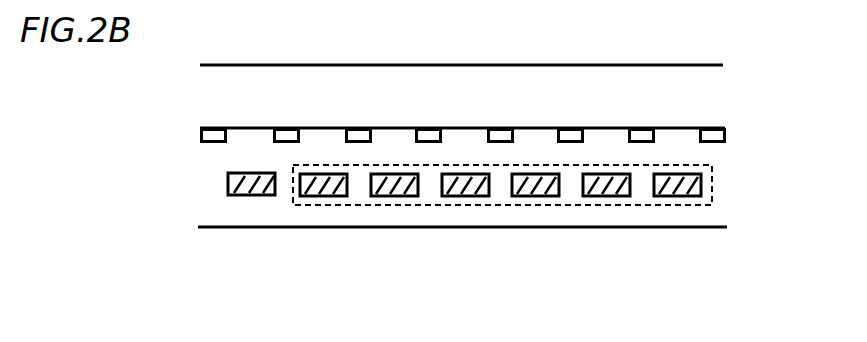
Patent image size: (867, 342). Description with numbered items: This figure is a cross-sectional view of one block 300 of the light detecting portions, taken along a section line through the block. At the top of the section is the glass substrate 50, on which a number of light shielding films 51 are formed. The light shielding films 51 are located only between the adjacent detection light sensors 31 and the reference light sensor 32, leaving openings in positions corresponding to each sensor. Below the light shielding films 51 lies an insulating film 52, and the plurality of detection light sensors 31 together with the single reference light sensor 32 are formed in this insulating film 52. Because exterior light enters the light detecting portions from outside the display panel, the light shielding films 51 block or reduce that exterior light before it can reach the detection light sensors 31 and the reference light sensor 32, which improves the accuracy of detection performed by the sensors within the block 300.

The glass substrate 50 is at (720, 97).
The light shielding film 51 is at (725, 133).
The insulating film 52 is at (713, 157).
The detection light sensor 31 is at (690, 185).
The reference light sensor 32 is at (222, 190).
The block 300 is at (508, 258).